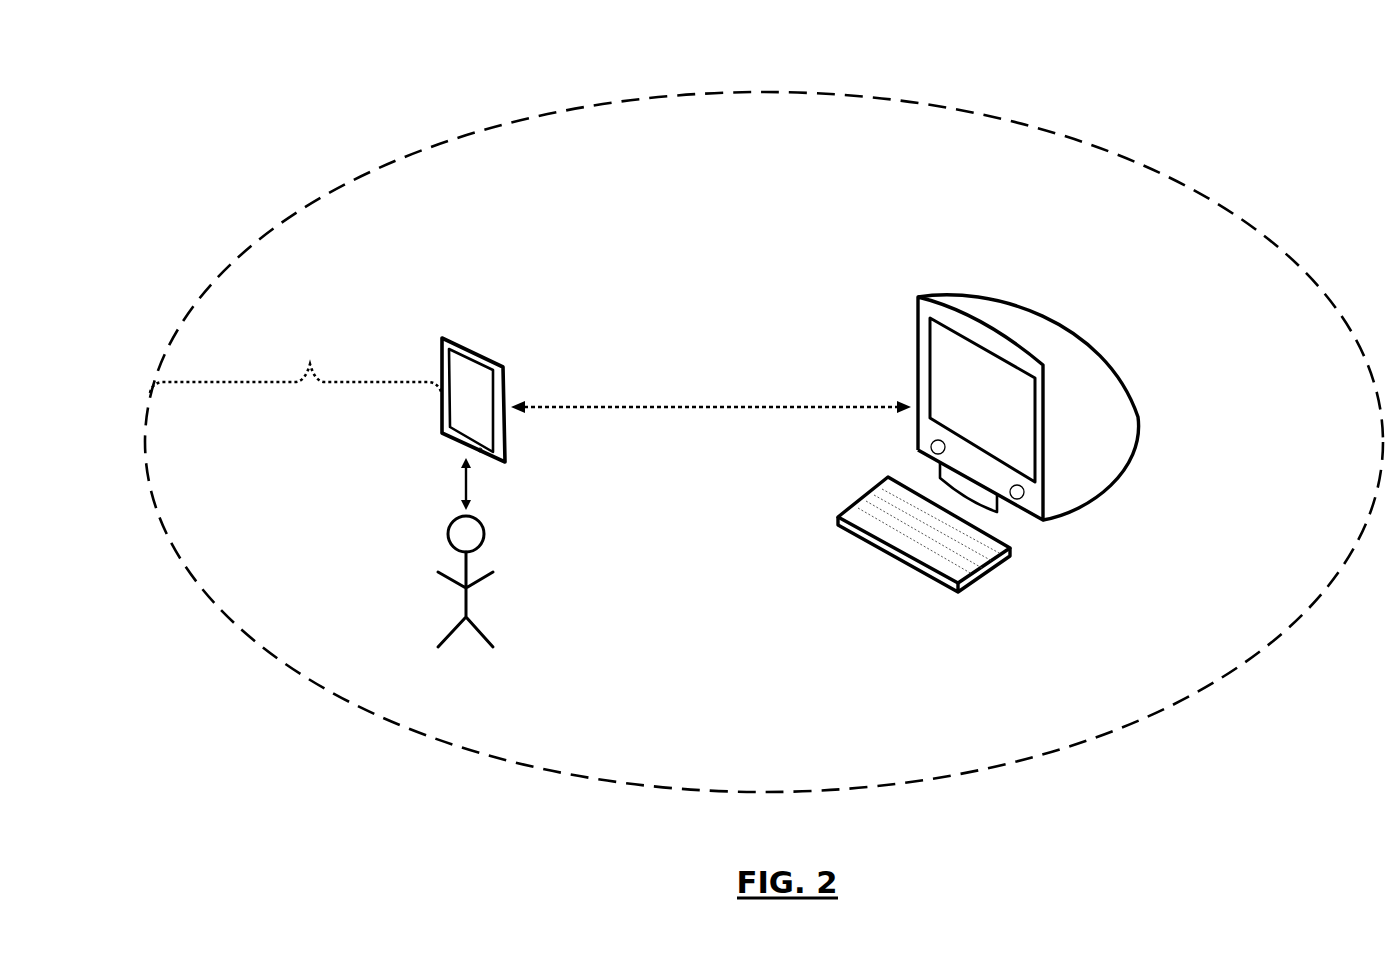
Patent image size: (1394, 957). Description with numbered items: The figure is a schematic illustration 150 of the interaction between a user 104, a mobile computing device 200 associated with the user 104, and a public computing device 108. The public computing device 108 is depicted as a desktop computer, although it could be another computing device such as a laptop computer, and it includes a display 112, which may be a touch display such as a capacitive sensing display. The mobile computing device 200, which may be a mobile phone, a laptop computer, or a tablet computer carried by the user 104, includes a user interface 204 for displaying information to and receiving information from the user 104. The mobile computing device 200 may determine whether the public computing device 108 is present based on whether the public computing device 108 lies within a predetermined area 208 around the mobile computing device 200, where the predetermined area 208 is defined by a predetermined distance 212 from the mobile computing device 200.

The schematic illustration 150 is at (237, 59).
The predetermined area 208 is at (785, 92).
The mobile computing device 200 is at (478, 342).
The user interface 204 is at (477, 378).
The predetermined distance 212 is at (296, 366).
The user 104 is at (423, 569).
The public computing device 108 is at (1000, 297).
The display 112 is at (1015, 442).